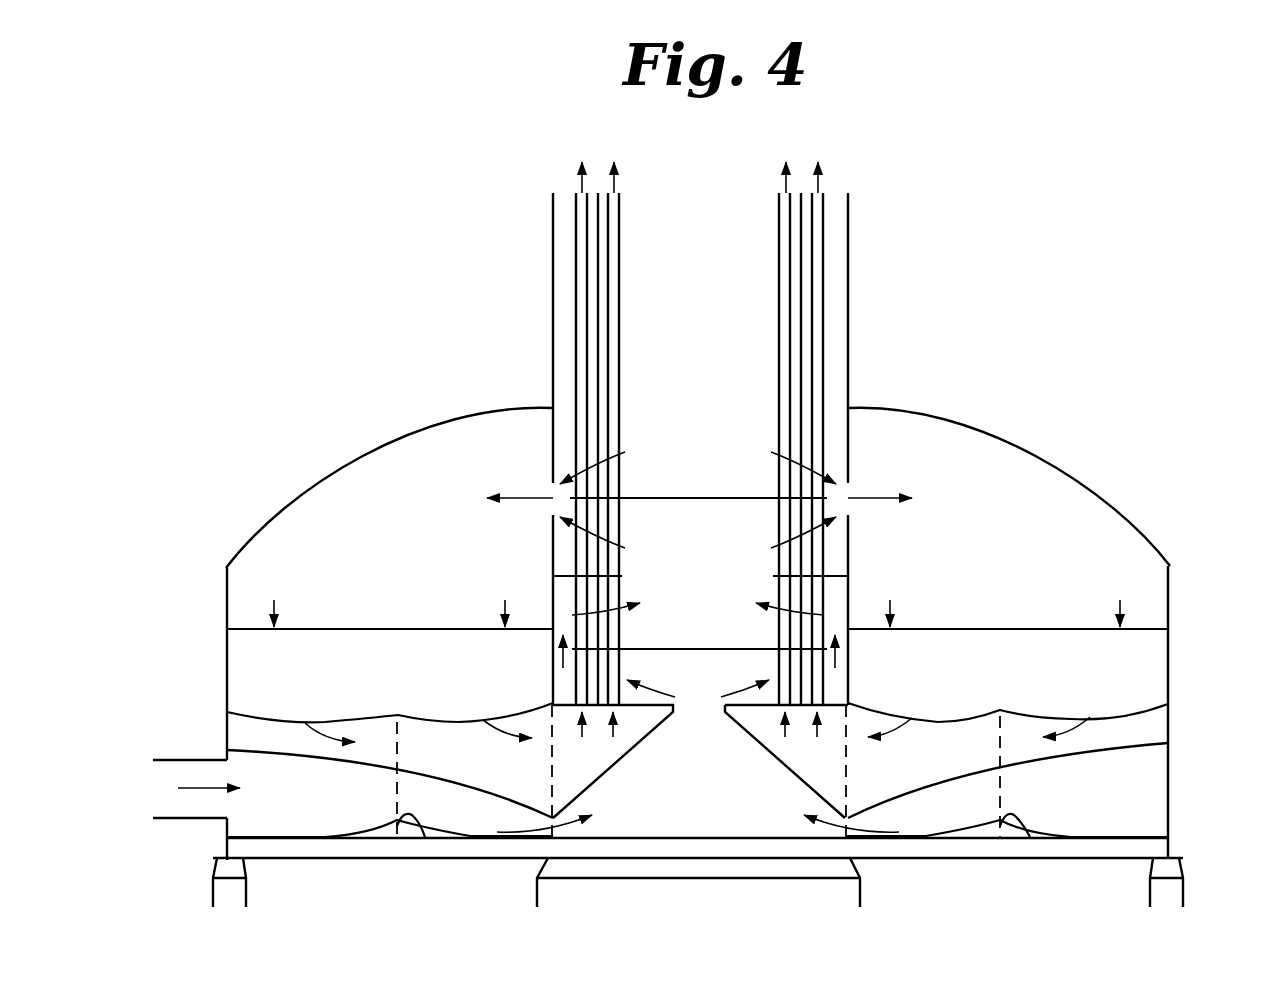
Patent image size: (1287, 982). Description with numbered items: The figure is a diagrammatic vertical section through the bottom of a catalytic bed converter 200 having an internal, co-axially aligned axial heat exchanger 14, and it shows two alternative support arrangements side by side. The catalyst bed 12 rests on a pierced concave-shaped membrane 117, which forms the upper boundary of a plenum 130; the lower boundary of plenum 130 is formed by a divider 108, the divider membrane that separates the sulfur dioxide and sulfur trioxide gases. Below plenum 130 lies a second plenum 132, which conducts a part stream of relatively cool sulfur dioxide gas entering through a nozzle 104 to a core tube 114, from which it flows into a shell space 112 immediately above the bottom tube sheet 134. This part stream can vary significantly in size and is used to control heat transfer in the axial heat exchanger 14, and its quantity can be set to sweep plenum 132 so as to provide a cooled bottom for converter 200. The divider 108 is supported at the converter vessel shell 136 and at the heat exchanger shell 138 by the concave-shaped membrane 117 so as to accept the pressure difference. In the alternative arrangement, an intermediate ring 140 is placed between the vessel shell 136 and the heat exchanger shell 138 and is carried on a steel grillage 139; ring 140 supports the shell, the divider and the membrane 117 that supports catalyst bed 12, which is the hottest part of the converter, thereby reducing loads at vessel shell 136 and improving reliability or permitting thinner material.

The axial heat exchanger 14 is at (848, 255).
The converter 200 is at (1075, 478).
The converter vessel shell 136 is at (1168, 668).
The nozzle 104 is at (178, 760).
The catalyst bed 12 is at (393, 660).
The heat exchanger shell 138 is at (848, 585).
The shell space 112 is at (696, 678).
The core tube 114 is at (727, 715).
The pierced concave-shaped membrane 117 is at (268, 718).
The bottom tube sheet 134 is at (848, 700).
The plenum 130 is at (432, 757).
The divider 108 is at (1085, 755).
The second plenum 132 is at (316, 800).
The intermediate ring 140 is at (402, 838).
The steel grillage 139 is at (480, 858).